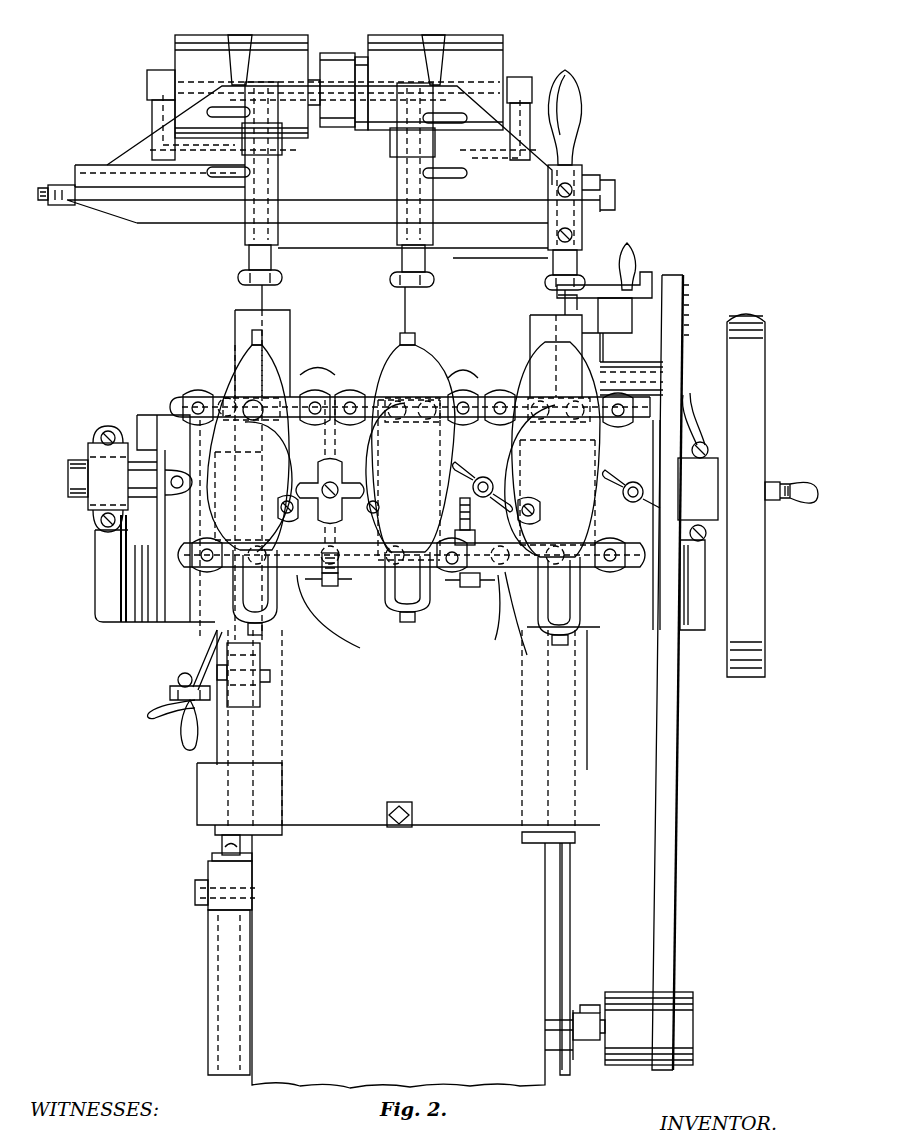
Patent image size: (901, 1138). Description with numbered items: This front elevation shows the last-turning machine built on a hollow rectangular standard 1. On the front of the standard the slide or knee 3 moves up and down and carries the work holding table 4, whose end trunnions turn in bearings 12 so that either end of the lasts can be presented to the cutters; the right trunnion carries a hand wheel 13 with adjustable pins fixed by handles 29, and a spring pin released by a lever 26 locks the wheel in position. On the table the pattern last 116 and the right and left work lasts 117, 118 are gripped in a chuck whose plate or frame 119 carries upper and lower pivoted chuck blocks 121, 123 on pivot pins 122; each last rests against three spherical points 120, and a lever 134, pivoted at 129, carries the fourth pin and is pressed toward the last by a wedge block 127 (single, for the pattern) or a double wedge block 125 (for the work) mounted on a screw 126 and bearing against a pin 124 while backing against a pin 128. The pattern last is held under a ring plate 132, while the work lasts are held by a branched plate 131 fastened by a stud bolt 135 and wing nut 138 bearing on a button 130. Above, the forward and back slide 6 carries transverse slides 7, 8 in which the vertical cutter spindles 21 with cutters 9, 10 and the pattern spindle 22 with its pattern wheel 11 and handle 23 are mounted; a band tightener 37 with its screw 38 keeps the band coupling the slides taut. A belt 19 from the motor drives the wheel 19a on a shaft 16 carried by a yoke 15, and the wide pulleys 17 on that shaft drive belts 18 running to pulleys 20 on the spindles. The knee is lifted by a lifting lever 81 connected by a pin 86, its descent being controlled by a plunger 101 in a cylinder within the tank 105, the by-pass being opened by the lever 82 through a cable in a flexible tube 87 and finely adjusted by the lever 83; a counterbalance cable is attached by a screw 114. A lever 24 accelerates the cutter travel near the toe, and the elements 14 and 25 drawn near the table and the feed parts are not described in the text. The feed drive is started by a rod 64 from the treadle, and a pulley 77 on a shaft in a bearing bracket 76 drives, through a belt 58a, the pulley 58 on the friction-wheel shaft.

The hollow rectangular standard 1 is at (275, 995).
The slide or knee 3 is at (105, 556).
The work holding table 4 is at (140, 432).
The forward and back slide 6 is at (135, 212).
The transverse slide 7 is at (556, 168).
The transverse slide 8 is at (150, 150).
The cutter 9 is at (238, 280).
The cutter 10 is at (434, 282).
The pattern wheel 11 is at (580, 280).
The bearings 12 is at (100, 495).
The hand wheel 13 is at (748, 312).
The shaft 14 is at (75, 470).
The yoke 15 is at (152, 112).
The shaft 16 is at (147, 82).
The wide pulleys 17 is at (505, 47).
The belts 18 is at (240, 40).
The belt 19 is at (345, 62).
The wheel 19a is at (360, 57).
The pulleys 20 is at (397, 145).
The cutter spindle 21 is at (248, 260).
The pattern spindle 22 is at (553, 262).
The handle 23 is at (580, 107).
The lever 24 is at (633, 252).
The bracket 25 is at (620, 275).
The lever 26 is at (692, 402).
The handles 29 is at (802, 512).
The tightener 37 is at (48, 192).
The screw 38 is at (38, 200).
The pulley 58 is at (690, 285).
The belt 58a is at (667, 843).
The rod 64 is at (570, 890).
The bearing bracket 76 is at (578, 1013).
The pulley 77 is at (680, 993).
The lifting lever 81 is at (182, 739).
The lever 82 is at (148, 712).
The lever 83 is at (180, 679).
The pin 86 is at (262, 678).
The flexible tube 87 is at (208, 652).
The plunger 101 is at (222, 841).
The tank 105 is at (210, 958).
The screw 114 is at (405, 826).
The pattern last 116 is at (555, 370).
The work last 117 is at (405, 365).
The work last 118 is at (245, 370).
The chuck frame plate 119 is at (175, 412).
The spherical points 120 is at (434, 400).
The upper chuck blocks 121 is at (195, 395).
The pivot pins 122 is at (182, 398).
The lower chuck blocks 123 is at (283, 575).
The pin 124 is at (426, 620).
The double wedge block 125 is at (345, 590).
The screw 126 is at (330, 590).
The wedge block 127 is at (505, 600).
The pin 128 is at (458, 530).
The pivot 129 is at (280, 505).
The button 130 is at (355, 484).
The branched plate 131 is at (357, 450).
The ring plate 132 is at (512, 467).
The lever 134 is at (285, 522).
The stud bolt 135 is at (315, 485).
The wing nut 138 is at (290, 450).